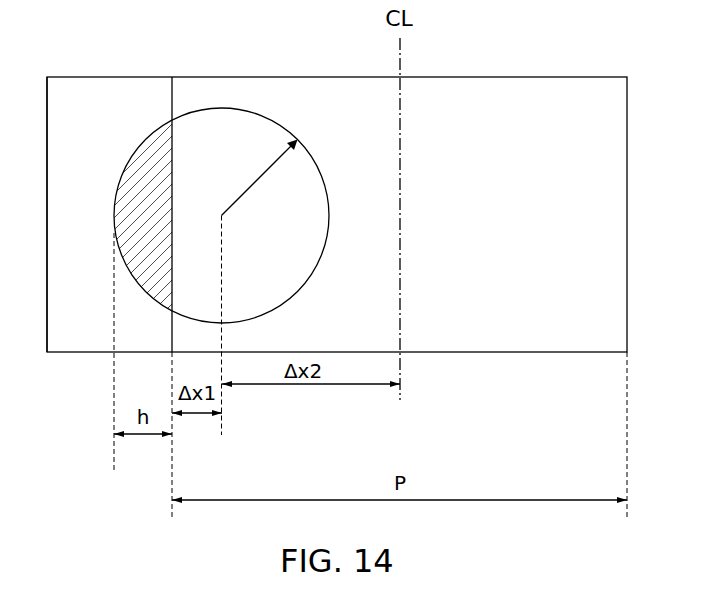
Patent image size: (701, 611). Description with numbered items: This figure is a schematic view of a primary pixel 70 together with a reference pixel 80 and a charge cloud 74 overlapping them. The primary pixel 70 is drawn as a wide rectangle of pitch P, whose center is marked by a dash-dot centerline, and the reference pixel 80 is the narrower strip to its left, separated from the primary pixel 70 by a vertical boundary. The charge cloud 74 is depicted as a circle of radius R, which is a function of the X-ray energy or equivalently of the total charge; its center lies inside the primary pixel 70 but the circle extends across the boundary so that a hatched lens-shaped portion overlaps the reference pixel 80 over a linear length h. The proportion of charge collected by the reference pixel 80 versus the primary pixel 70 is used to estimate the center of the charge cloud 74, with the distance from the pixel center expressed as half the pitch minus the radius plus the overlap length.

The primary pixel 70 is at (514, 77).
The charge cloud 74 is at (229, 100).
The reference pixel 80 is at (105, 77).